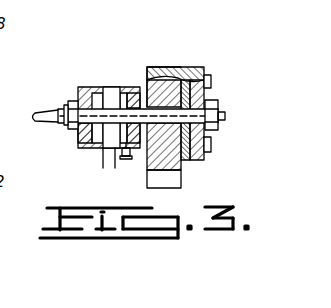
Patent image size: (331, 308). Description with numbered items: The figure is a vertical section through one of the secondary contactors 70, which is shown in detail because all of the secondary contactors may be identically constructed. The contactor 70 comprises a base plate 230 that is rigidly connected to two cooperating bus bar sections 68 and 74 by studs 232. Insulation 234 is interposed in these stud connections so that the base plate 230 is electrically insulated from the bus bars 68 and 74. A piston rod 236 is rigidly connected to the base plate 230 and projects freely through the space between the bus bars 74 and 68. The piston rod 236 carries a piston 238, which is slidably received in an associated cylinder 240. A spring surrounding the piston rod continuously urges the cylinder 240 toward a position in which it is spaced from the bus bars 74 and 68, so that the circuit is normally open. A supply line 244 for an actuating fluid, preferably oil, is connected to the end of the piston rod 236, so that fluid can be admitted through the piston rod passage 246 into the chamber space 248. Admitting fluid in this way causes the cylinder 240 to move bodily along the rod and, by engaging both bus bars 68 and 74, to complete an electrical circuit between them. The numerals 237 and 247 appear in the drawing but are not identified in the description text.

The secondary contactor 70 is at (86, 88).
The bus bar section 74 is at (157, 68).
The bus bar section 68 is at (182, 167).
The base plate 230 is at (200, 98).
The stud 232 is at (210, 78).
The insulation 234 is at (183, 69).
The piston rod 236 is at (126, 104).
The lower flange 237 is at (210, 146).
The piston 238 is at (107, 96).
The cylinder 240 is at (103, 153).
The supply line 244 is at (45, 94).
The piston rod passage 246 is at (75, 113).
The collar 247 is at (80, 133).
The chamber space 248 is at (127, 128).